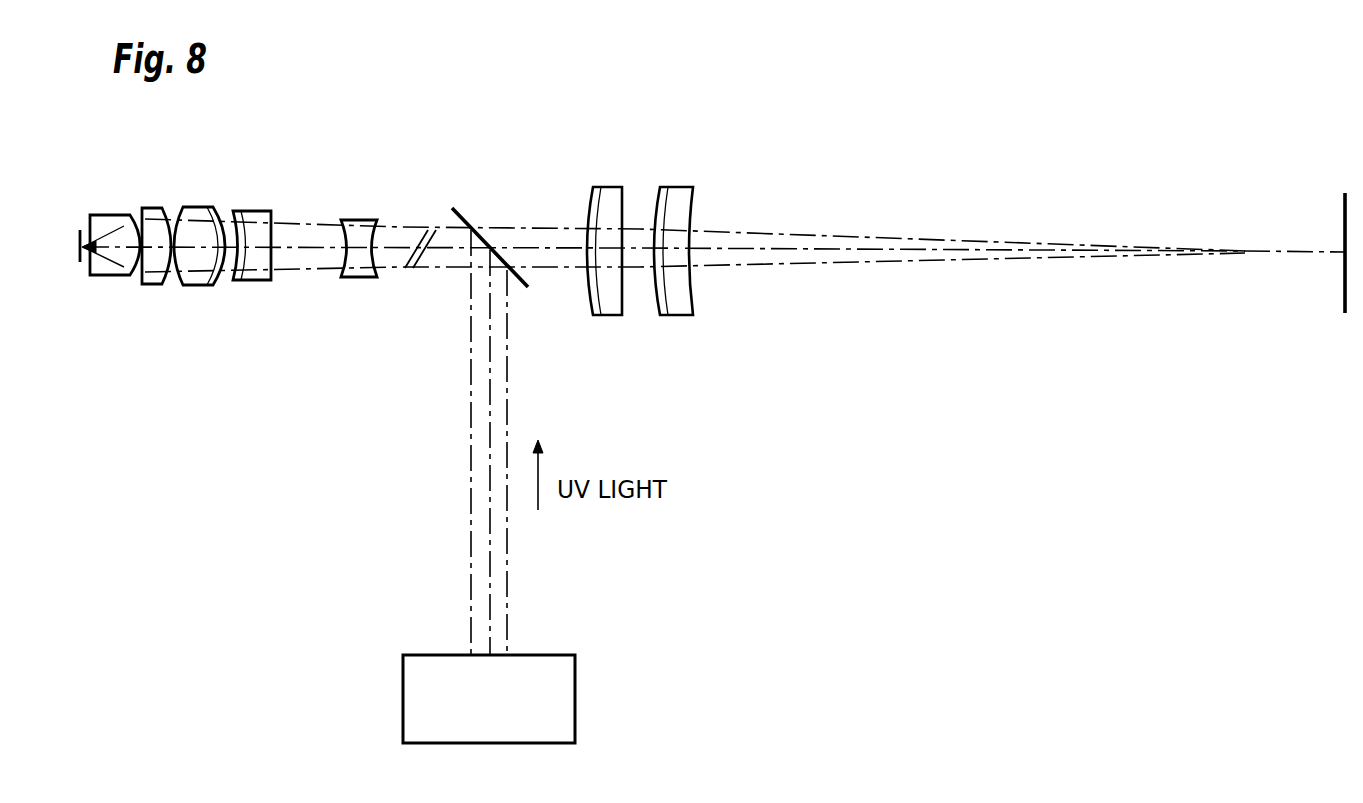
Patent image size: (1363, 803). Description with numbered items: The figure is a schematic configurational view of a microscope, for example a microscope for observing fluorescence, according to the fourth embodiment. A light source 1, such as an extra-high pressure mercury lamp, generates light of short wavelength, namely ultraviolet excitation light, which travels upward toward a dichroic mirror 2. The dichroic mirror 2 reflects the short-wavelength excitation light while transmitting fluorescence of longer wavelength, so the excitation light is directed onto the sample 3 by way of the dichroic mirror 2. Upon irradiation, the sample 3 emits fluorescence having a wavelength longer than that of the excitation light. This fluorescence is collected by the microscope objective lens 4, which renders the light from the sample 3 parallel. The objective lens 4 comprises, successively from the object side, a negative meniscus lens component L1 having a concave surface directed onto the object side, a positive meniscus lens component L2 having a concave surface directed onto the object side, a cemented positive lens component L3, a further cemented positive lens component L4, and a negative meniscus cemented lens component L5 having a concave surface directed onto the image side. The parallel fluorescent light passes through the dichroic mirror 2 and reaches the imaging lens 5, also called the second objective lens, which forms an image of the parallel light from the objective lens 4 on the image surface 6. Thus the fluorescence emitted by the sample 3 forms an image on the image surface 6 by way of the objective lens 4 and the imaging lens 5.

The light source 1 is at (576, 697).
The dichroic mirror 2 is at (470, 227).
The sample 3 is at (79, 263).
The objective lens 4 is at (230, 231).
The imaging lens 5 is at (698, 184).
The image surface 6 is at (1343, 295).
The negative meniscus lens component L1 is at (108, 277).
The positive meniscus lens component L2 is at (150, 285).
The cemented positive lens component L3 is at (198, 286).
The cemented positive lens component L4 is at (258, 281).
The negative meniscus cemented lens component L5 is at (359, 272).